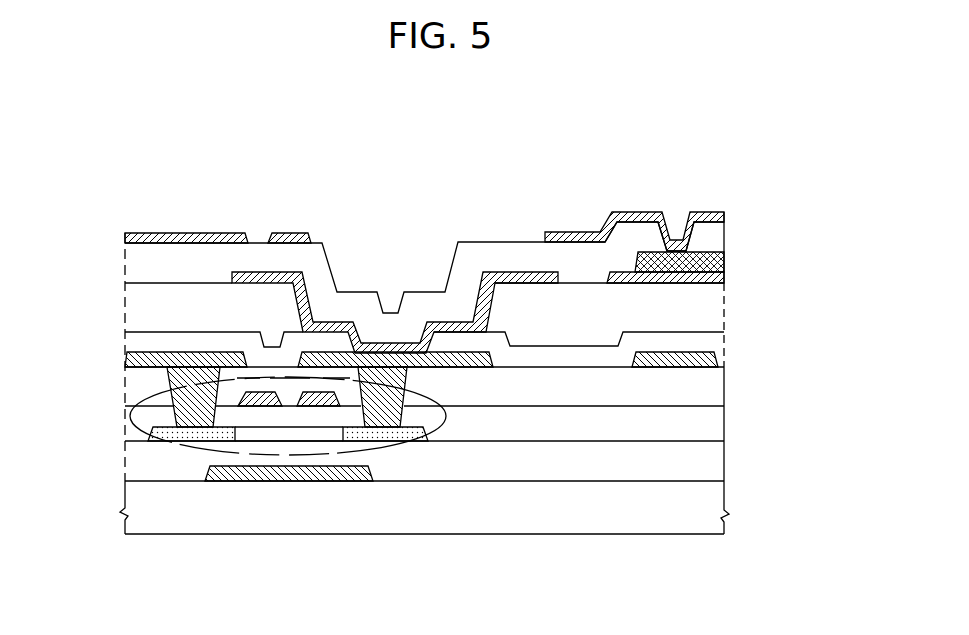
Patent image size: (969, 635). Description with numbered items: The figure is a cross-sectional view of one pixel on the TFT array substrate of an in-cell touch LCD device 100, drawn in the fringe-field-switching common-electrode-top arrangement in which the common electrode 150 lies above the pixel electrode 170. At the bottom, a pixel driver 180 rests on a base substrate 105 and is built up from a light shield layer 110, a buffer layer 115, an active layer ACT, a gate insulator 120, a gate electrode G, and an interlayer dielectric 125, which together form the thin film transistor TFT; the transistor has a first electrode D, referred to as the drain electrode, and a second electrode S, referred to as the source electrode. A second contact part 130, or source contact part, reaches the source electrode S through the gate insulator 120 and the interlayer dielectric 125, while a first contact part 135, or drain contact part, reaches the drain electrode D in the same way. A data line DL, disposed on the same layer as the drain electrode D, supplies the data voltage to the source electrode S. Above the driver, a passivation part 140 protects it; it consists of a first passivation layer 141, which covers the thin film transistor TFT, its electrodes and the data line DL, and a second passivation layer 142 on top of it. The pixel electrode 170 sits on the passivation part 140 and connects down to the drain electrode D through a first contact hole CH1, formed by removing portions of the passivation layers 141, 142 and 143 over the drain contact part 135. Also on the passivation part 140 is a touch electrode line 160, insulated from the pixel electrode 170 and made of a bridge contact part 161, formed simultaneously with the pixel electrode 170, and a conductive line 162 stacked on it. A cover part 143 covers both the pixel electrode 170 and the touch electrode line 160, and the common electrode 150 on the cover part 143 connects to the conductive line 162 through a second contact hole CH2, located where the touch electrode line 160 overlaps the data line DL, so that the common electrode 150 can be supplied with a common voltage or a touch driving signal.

The in-cell touch LCD device 100 is at (440, 132).
The base substrate 105 is at (716, 495).
The light shield layer 110 is at (318, 468).
The buffer layer 115 is at (716, 455).
The gate insulator 120 is at (716, 423).
The interlayer dielectric 125 is at (716, 392).
The second contact part 130 is at (128, 360).
The first contact part 135 is at (455, 367).
The passivation part 140 is at (786, 304).
The first passivation layer 141 is at (716, 339).
The second passivation layer 142 is at (716, 310).
The cover part 143 is at (715, 238).
The common electrode 150 is at (283, 233).
The touch electrode line 160 is at (786, 253).
The bridge contact part 161 is at (716, 286).
The conductive line 162 is at (716, 264).
The pixel electrode 170 is at (497, 274).
The pixel driver 180 is at (786, 354).
The second electrode S is at (180, 430).
The first electrode D is at (400, 430).
The gate electrode G is at (313, 408).
The active layer ACT is at (332, 437).
The thin film transistor TFT is at (432, 440).
The data line DL is at (716, 362).
The first contact hole CH1 is at (388, 265).
The second contact hole CH2 is at (677, 213).